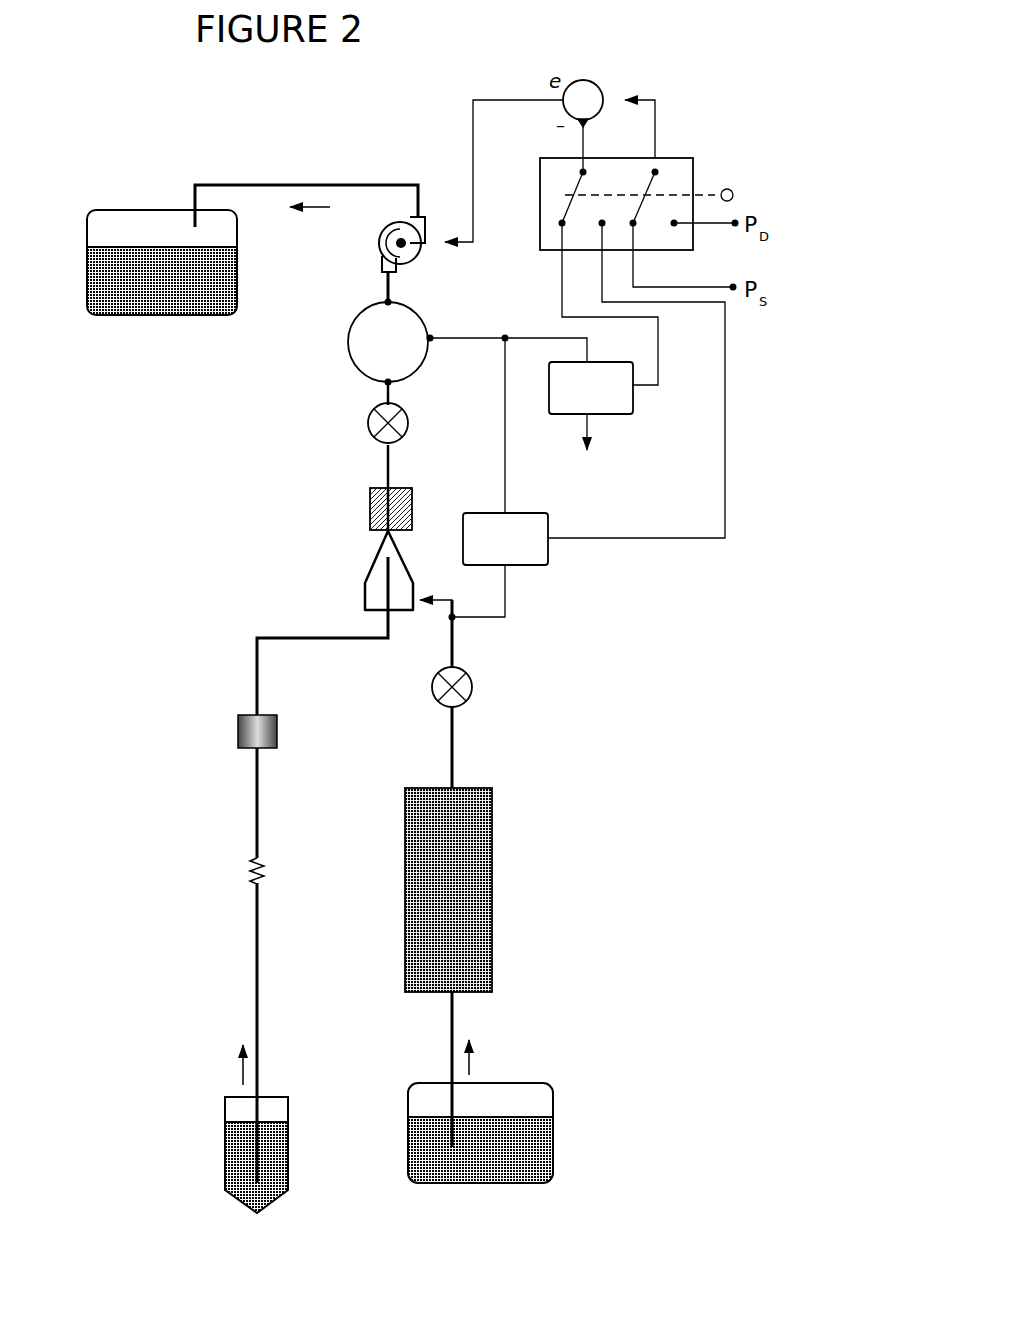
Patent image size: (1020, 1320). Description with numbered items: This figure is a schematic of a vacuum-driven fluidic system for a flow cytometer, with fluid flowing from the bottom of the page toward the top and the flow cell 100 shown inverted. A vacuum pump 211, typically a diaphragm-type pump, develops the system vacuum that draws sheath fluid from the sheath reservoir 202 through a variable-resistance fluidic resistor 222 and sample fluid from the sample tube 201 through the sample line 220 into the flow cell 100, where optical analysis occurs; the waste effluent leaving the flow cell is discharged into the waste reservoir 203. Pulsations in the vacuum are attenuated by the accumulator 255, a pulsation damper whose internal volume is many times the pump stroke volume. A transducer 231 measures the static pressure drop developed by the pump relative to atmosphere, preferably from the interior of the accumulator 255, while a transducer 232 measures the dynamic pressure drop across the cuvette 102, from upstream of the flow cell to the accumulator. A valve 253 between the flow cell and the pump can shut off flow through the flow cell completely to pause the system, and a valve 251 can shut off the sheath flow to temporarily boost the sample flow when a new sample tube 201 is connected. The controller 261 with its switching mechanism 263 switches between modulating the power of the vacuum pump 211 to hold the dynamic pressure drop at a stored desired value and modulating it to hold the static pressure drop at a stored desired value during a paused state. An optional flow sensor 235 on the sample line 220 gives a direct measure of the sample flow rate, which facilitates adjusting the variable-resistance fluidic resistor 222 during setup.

The flow cell 100 is at (217, 518).
The cuvette 102 is at (360, 497).
The sample tube 201 is at (202, 1165).
The sheath reservoir 202 is at (585, 1135).
The waste reservoir 203 is at (105, 195).
The vacuum pump 211 is at (386, 200).
The sample line 220 is at (240, 922).
The variable-resistance fluidic resistor 222 is at (497, 873).
The transducer 231 is at (624, 422).
The transducer 232 is at (565, 573).
The flow sensor 235 is at (226, 727).
The valve 251 is at (497, 683).
The valve 253 is at (364, 423).
The accumulator 255 is at (345, 343).
The controller 261 is at (653, 72).
The switching mechanism 263 is at (702, 142).